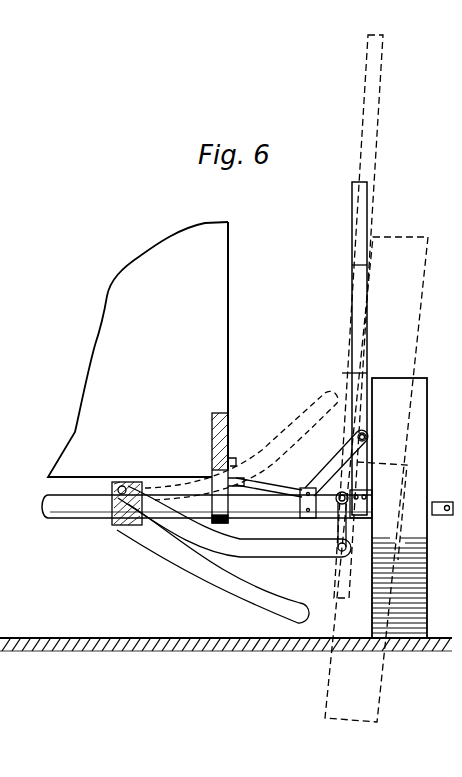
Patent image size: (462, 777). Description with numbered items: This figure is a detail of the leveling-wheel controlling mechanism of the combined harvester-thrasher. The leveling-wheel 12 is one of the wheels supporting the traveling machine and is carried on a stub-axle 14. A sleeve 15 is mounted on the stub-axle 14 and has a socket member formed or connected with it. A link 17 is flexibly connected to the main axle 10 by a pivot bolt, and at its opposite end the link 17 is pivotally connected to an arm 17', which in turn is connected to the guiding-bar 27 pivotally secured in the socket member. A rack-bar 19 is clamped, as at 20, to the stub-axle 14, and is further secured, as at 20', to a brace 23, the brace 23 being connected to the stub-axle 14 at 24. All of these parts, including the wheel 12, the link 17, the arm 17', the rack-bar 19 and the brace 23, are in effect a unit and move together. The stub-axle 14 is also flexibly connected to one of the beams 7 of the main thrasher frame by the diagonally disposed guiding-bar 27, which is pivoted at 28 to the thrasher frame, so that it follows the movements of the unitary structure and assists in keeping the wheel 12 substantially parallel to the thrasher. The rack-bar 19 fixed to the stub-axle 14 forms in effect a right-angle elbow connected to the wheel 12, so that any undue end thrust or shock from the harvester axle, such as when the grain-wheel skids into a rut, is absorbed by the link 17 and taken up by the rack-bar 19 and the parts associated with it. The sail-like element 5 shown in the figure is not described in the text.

The sail 5 is at (138, 349).
The beam 7 is at (212, 442).
The main axle 10 is at (78, 514).
The leveling-wheel 12 is at (399, 508).
The stub-axle 14 is at (440, 516).
The sleeve 15 is at (306, 520).
The link 17 is at (231, 552).
The arm 17' is at (356, 547).
The rack-bar 19 is at (370, 373).
The clamp 20 is at (373, 519).
The brace connection 20' is at (383, 445).
The brace 23 is at (326, 480).
The stub-axle connection 24 is at (260, 482).
The guiding-bar 27 is at (260, 490).
The pivot 28 is at (233, 462).